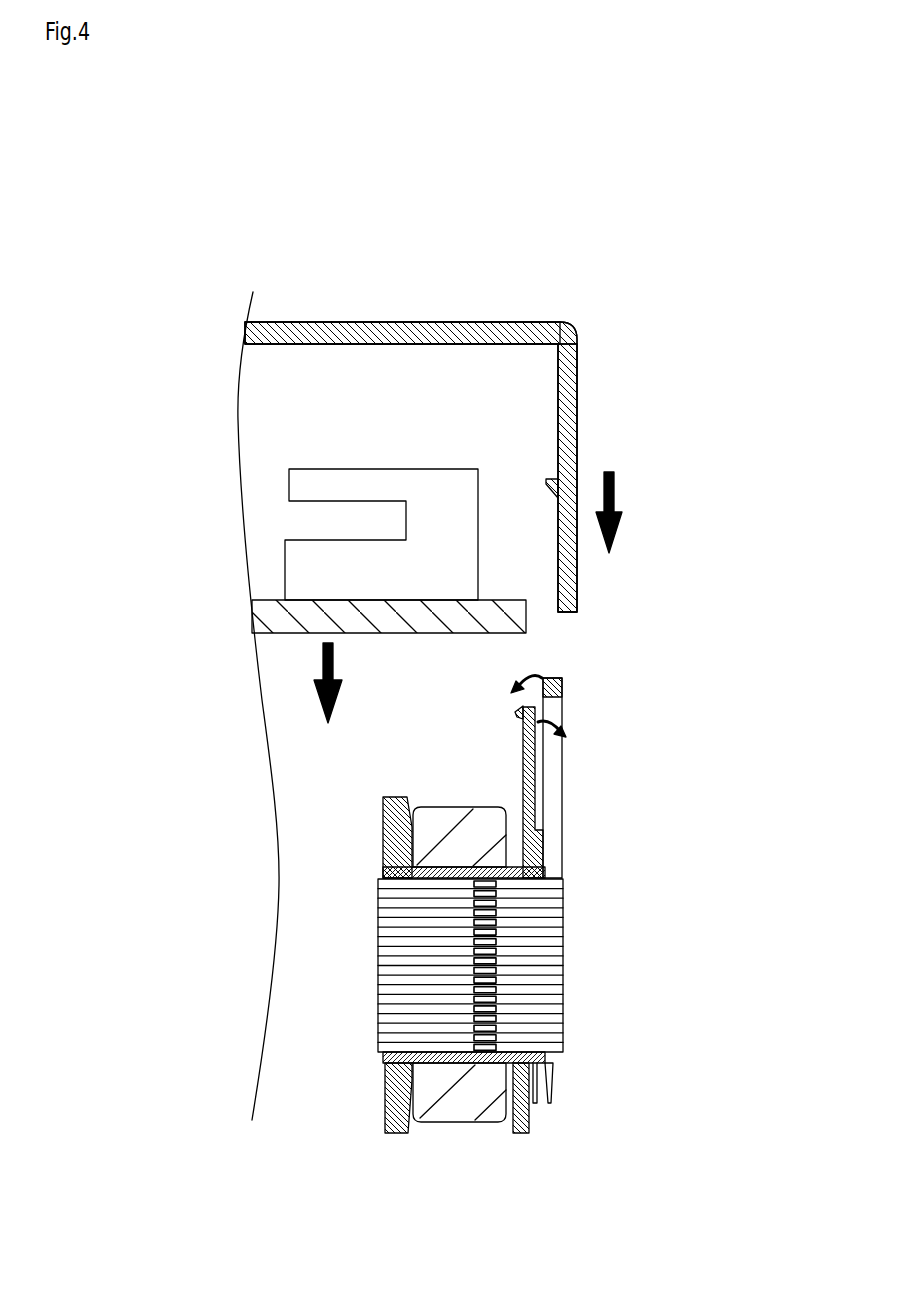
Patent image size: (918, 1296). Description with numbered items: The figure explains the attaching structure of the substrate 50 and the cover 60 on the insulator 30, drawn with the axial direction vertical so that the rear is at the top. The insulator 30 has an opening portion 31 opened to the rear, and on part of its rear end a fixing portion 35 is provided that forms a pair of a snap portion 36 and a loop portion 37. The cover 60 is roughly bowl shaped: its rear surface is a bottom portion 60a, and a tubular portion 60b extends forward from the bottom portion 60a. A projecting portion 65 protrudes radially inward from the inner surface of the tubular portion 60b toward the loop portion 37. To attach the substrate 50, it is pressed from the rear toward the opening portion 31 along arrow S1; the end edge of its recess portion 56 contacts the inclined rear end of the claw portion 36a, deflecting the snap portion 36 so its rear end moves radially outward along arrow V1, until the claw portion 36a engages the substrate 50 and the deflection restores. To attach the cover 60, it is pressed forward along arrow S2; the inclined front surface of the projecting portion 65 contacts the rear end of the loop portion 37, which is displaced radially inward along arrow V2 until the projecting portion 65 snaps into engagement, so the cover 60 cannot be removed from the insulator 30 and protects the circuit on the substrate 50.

The insulator 30 is at (504, 892).
The opening portion 31 is at (280, 730).
The fixing portion 35 is at (608, 778).
The snap portion 36 is at (572, 785).
The claw portion 36a is at (516, 712).
The loop portion 37 is at (563, 680).
The substrate 50 is at (272, 600).
The recess portion 56 is at (528, 620).
The cover 60 is at (411, 405).
The bottom portion 60a is at (363, 322).
The tubular portion 60b is at (558, 580).
The projecting portion 65 is at (546, 482).
The arrow S1 is at (320, 670).
The arrow S2 is at (614, 495).
The arrow V1 is at (568, 740).
The arrow V2 is at (538, 678).